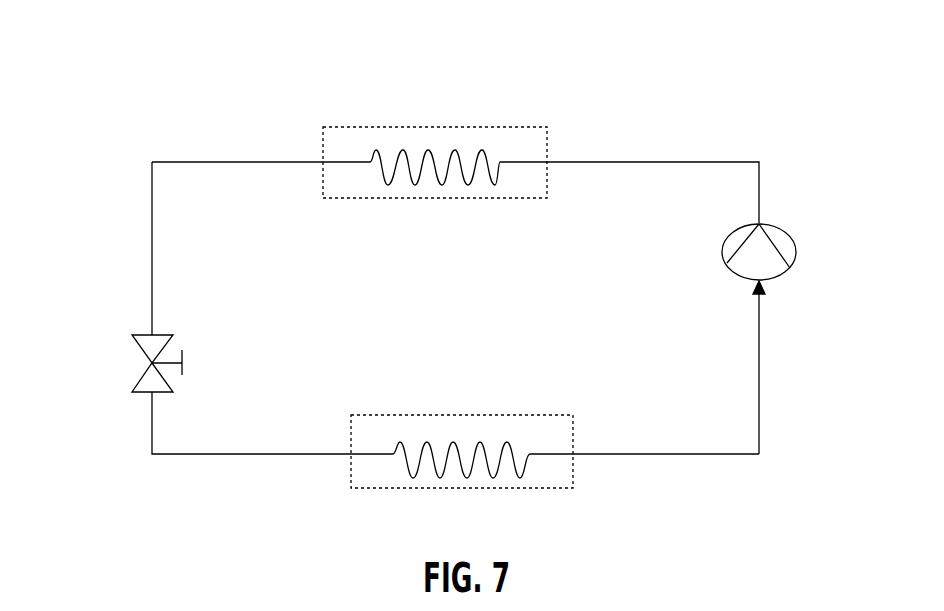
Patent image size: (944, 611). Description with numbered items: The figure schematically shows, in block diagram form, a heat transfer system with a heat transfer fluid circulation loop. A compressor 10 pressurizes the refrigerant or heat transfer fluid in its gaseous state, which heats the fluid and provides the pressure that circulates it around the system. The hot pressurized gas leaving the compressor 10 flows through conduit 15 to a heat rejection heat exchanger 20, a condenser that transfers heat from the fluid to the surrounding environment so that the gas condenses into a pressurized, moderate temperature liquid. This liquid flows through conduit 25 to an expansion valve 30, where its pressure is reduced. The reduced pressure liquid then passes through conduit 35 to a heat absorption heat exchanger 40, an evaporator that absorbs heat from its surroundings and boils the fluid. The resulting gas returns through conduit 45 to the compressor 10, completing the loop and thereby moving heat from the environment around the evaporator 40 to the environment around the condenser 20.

The compressor 10 is at (797, 252).
The conduit 15 is at (657, 162).
The heat rejection heat exchanger 20 is at (538, 145).
The conduit 25 is at (195, 162).
The expansion valve 30 is at (140, 362).
The conduit 35 is at (285, 448).
The heat absorption heat exchanger 40 is at (447, 488).
The conduit 45 is at (657, 443).